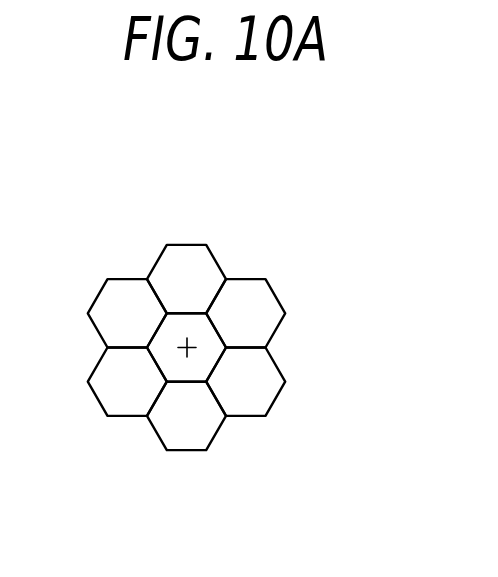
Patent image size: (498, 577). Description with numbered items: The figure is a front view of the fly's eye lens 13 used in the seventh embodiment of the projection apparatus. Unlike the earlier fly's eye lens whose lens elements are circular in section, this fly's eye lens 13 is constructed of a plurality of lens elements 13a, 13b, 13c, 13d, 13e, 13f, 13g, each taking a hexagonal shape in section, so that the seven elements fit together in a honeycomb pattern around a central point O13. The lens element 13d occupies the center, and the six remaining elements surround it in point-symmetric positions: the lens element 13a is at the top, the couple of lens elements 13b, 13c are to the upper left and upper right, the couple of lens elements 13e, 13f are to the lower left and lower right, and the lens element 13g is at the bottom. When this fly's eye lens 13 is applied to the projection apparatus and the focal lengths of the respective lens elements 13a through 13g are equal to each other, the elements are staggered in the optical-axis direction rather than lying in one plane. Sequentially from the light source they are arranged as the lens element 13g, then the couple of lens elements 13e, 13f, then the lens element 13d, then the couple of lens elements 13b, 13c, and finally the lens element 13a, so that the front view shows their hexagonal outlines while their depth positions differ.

The fly's eye lens 13 is at (202, 344).
The lens element 13a is at (186, 251).
The lens element 13b is at (122, 289).
The lens element 13c is at (253, 304).
The lens element 13d is at (167, 333).
The lens element 13e is at (128, 402).
The lens element 13f is at (243, 402).
The lens element 13g is at (188, 430).
The center point of the hexagonal array O13 is at (116, 378).